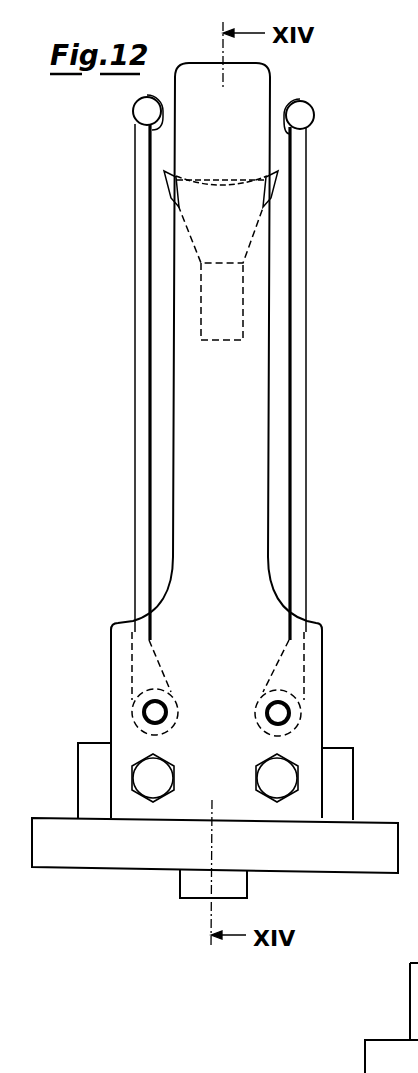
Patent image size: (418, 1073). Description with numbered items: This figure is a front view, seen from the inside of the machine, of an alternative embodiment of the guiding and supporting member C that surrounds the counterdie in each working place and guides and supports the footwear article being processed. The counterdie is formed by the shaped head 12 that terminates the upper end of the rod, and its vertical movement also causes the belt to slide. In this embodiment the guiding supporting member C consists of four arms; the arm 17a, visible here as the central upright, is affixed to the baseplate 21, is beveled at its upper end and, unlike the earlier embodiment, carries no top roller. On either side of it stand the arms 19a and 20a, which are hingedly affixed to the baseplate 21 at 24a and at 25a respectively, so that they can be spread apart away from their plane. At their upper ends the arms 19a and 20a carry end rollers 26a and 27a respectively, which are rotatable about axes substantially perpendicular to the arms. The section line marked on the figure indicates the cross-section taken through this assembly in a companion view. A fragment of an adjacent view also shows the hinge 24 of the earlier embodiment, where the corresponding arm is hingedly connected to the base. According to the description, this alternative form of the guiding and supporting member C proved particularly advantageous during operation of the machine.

The shaped head 12 is at (275, 181).
The arm 17a is at (238, 440).
The arm 19a is at (298, 380).
The arm 20a is at (143, 412).
The baseplate 21 is at (337, 797).
The hinge point 24a is at (278, 713).
The hinge point 25a is at (155, 712).
The end roller 26a is at (303, 117).
The end roller 27a is at (133, 112).
The guiding and supporting member C is at (307, 289).
The hinge point 24 is at (391, 995).